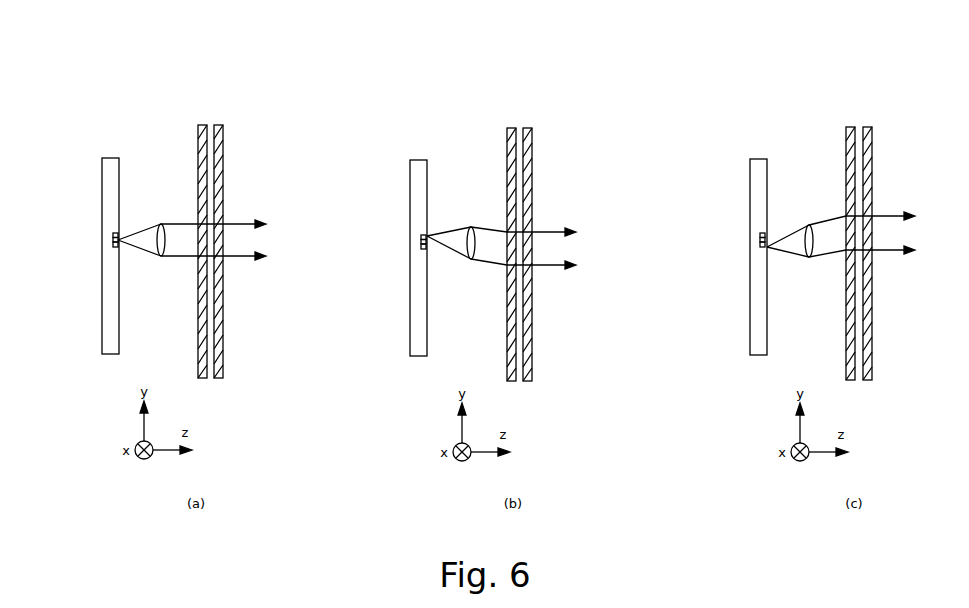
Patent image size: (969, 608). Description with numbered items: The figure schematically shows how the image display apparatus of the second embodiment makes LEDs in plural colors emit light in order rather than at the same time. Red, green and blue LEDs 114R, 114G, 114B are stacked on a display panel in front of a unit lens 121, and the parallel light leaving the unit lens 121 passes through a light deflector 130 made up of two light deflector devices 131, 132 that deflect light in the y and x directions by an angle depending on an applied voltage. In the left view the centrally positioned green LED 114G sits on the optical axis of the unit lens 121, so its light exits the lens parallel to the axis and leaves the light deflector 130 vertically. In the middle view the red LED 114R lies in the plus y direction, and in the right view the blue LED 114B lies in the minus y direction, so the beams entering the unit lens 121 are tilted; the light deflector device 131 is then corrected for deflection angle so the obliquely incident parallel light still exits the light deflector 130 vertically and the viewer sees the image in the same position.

The red LED 114R is at (113, 234).
The green LED 114G is at (113, 239).
The blue LED 114B is at (113, 245).
The unit lens 121 is at (159, 257).
The light deflector 130 is at (540, 211).
The light deflector device 131 is at (202, 125).
The light deflector device 132 is at (554, 227).